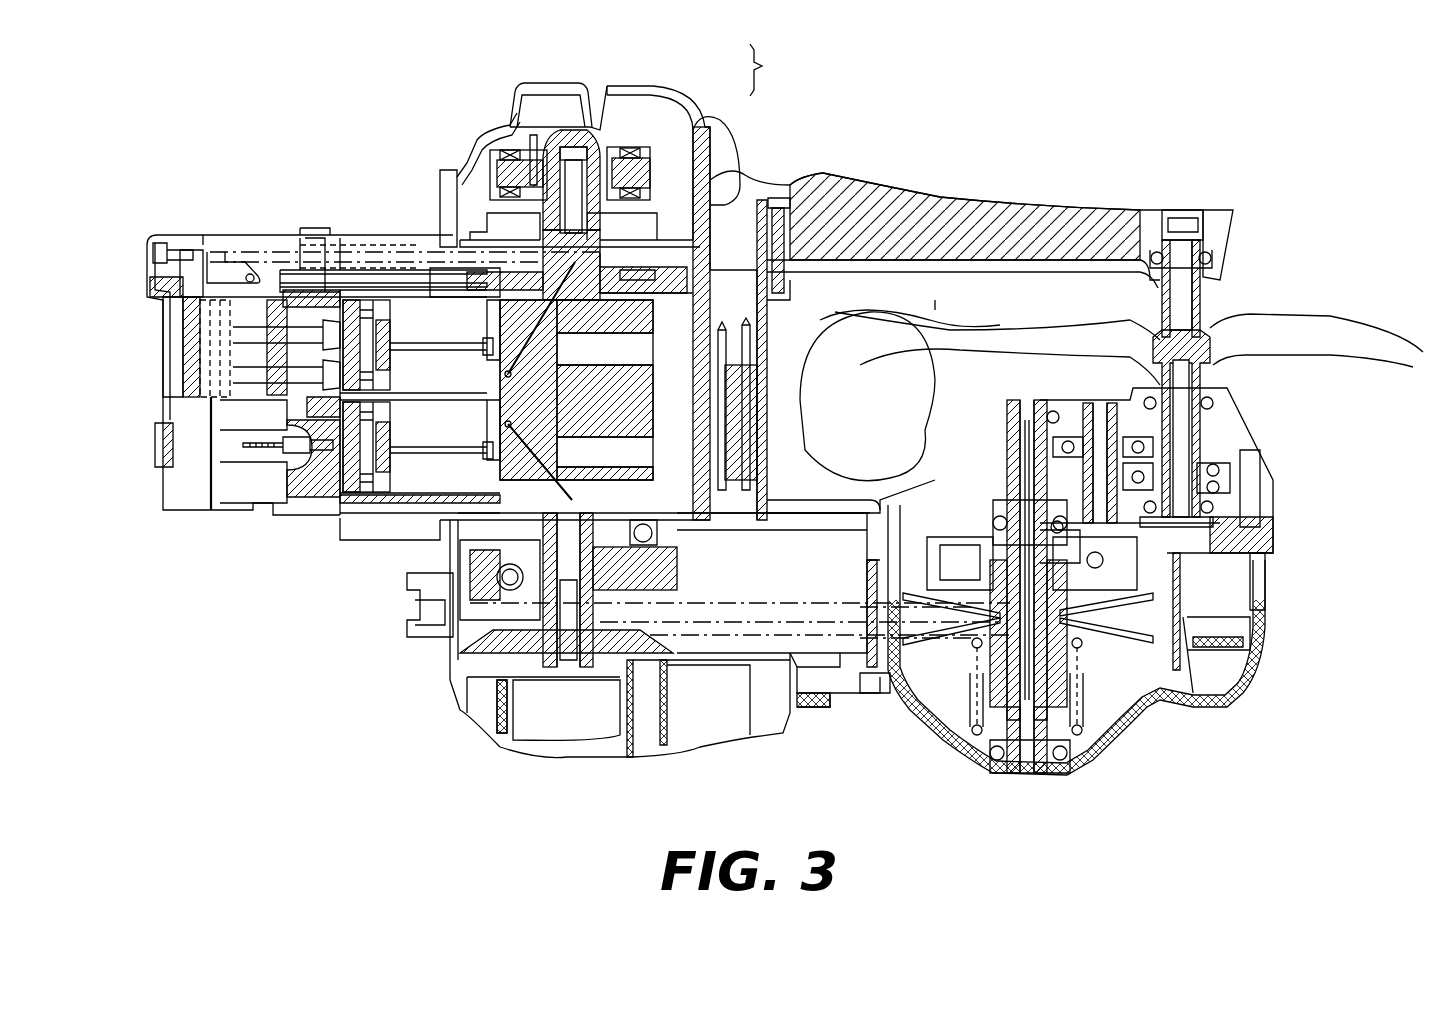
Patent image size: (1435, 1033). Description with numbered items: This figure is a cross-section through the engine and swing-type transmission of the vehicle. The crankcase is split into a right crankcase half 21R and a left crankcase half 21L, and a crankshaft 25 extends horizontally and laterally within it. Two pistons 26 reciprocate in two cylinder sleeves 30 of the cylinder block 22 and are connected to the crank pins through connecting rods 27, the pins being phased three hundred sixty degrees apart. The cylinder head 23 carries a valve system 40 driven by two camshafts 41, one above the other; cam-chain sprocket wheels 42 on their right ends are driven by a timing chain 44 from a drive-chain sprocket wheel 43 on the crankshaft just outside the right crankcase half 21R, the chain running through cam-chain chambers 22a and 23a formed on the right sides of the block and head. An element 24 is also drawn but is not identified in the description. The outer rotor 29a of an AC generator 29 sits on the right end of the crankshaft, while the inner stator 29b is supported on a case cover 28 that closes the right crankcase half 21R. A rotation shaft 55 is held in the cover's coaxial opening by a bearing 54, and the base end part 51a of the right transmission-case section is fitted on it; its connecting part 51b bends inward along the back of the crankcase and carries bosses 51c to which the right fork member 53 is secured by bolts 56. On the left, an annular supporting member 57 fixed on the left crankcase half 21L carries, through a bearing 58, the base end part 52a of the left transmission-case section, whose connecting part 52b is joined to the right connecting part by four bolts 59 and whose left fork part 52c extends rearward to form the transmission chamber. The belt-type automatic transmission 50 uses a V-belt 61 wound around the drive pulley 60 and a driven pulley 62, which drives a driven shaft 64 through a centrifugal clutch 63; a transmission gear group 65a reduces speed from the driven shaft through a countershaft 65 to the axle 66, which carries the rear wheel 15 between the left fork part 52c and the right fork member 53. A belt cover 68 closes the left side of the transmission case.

The rear wheel 15 is at (960, 342).
The right crankcase half 21R is at (735, 195).
The left crankcase half 21L is at (705, 516).
The cylinder block 22 is at (358, 512).
The cam-chain chamber 22a is at (400, 238).
The cylinder head 23 is at (268, 512).
The cam-chain chamber 23a is at (312, 240).
The head cover 24 is at (163, 380).
The crankshaft 25 is at (590, 332).
The pistons 26 is at (398, 327).
The connecting rods 27 is at (420, 360).
The case cover 28 is at (478, 148).
The AC generator 29 is at (764, 66).
The outer rotor 29a is at (660, 125).
The inner stator 29b is at (747, 111).
The cylinder sleeves 30 is at (478, 308).
The valve system 40 is at (265, 238).
The camshafts 41 is at (180, 338).
The cam-chain sprocket wheels 42 is at (222, 245).
The drive-chain sprocket wheel 43 is at (620, 270).
The timing chain 44 is at (360, 243).
The belt-type automatic transmission 50 is at (805, 660).
The base end part 51a is at (620, 86).
The connecting part 51b is at (865, 313).
The bosses 51c is at (805, 270).
The base end part 52a is at (437, 573).
The connecting part 52b is at (805, 418).
The left fork part 52c is at (1268, 481).
The right fork member 53 is at (975, 197).
The bearing 54 is at (527, 140).
The rotation shaft 55 is at (562, 83).
The bolts 56 is at (793, 198).
The annular supporting member 57 is at (660, 565).
The bearing 58 is at (690, 548).
The bolts 59 is at (738, 400).
The drive pulley 60 is at (530, 668).
The V-belt 61 is at (795, 601).
The driven pulley 62 is at (1103, 647).
The centrifugal clutch 63 is at (920, 593).
The driven shaft 64 is at (1022, 773).
The countershaft 65 is at (1100, 420).
The transmission gear group 65a is at (1222, 460).
The axle 66 is at (1200, 303).
The belt cover 68 is at (675, 758).